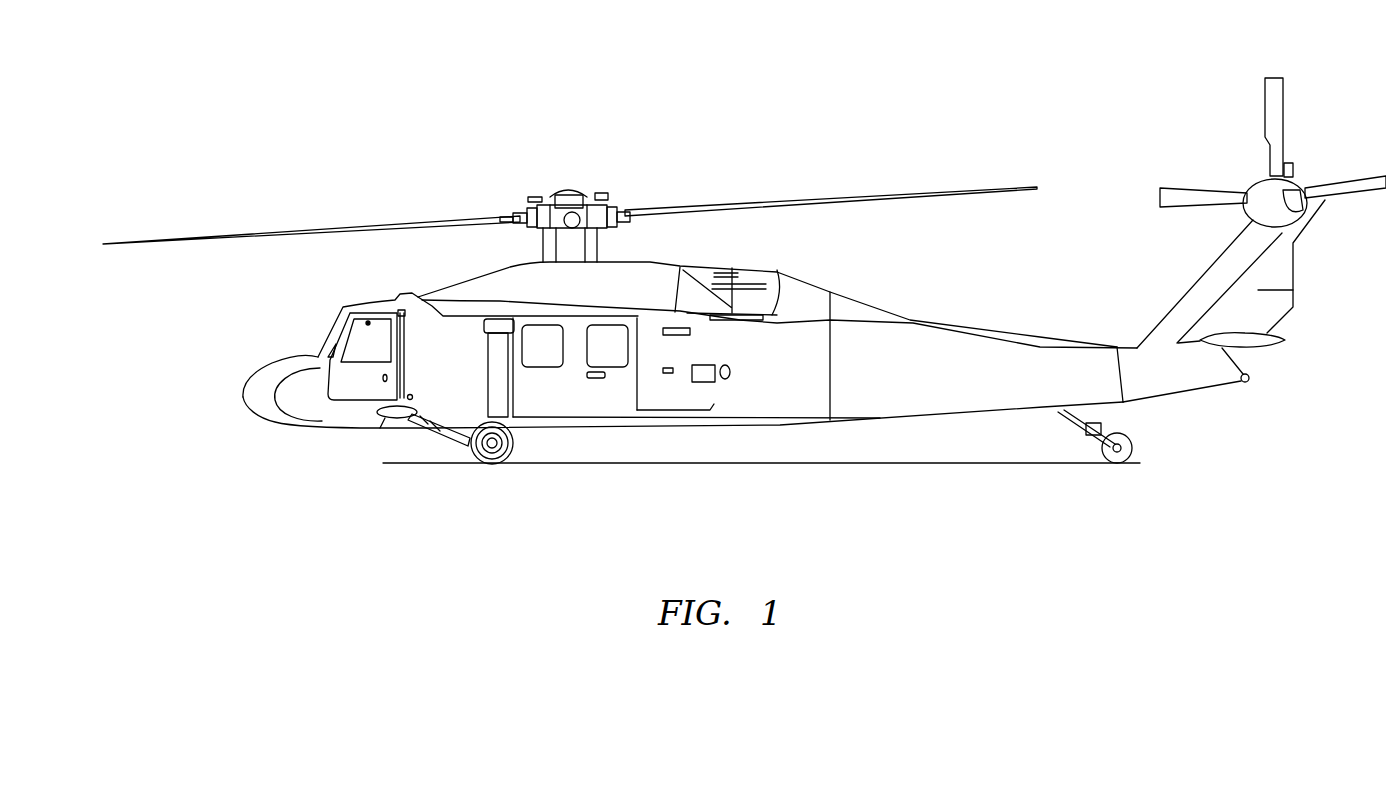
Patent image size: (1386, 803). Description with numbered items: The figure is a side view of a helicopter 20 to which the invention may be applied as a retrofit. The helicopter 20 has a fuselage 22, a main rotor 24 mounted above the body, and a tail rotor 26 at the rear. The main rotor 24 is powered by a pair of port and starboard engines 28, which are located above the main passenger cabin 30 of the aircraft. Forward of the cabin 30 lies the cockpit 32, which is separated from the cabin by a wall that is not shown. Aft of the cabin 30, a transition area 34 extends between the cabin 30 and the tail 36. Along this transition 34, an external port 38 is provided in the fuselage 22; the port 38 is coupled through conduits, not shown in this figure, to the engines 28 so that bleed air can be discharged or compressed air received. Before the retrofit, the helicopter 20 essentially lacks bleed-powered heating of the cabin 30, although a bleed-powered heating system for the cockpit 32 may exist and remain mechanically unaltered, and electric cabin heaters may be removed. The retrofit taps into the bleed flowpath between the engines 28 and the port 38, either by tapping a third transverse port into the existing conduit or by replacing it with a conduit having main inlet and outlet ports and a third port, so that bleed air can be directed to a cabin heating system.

The helicopter 20 is at (266, 338).
The fuselage 22 is at (822, 418).
The main rotor 24 is at (603, 184).
The tail rotor 26 is at (1296, 161).
The engines 28 is at (662, 274).
The main passenger cabin 30 is at (597, 392).
The cockpit 32 is at (345, 406).
The transition area 34 is at (737, 405).
The tail 36 is at (967, 354).
The external port 38 is at (725, 380).